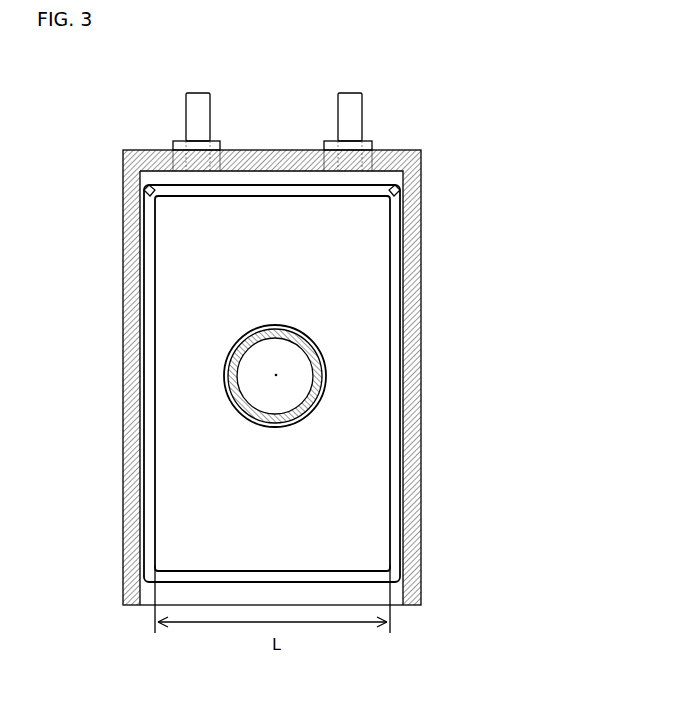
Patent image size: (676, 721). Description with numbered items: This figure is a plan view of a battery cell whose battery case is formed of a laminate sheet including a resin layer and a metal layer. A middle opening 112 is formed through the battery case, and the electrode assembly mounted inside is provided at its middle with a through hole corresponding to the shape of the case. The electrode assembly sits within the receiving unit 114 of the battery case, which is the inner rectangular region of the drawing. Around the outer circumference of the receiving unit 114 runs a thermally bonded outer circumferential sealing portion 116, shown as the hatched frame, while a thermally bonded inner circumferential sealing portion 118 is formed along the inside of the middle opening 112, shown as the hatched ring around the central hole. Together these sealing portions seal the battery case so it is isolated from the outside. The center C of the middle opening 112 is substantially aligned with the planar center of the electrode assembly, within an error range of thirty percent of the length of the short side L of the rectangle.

The middle opening 112 is at (252, 380).
The receiving unit 114 is at (373, 256).
The outer circumferential sealing portion 116 is at (410, 525).
The inner circumferential sealing portion 118 is at (325, 372).